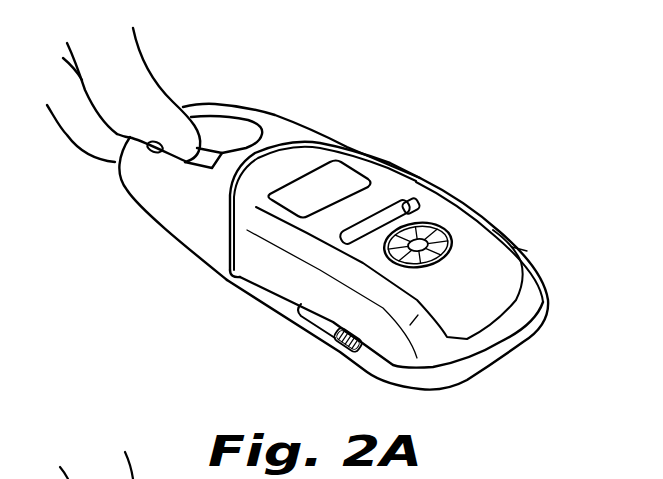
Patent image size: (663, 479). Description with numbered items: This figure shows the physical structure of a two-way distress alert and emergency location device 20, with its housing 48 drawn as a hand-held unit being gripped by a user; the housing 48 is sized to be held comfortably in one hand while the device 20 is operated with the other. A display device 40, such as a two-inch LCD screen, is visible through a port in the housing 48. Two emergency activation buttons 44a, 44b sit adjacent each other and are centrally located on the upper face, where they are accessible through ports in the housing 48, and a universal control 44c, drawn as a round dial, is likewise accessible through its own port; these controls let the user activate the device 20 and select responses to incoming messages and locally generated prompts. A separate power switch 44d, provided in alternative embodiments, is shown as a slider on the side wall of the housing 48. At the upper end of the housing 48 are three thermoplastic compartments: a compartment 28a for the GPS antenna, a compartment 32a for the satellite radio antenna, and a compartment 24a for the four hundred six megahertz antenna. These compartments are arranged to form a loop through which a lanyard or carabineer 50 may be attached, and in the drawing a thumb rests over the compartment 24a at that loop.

The device 20 is at (505, 88).
The lanyard or carabineer 50 is at (150, 123).
The compartment for the GPS antenna 28a is at (192, 205).
The compartment for the 406 MHz antenna 24a is at (229, 138).
The compartment for the satellite radio antenna 32a is at (293, 137).
The housing 48 is at (270, 300).
The display device 40 is at (333, 187).
The activation button 44a is at (375, 226).
The activation button 44b is at (410, 208).
The universal control 44c is at (420, 243).
The power switch 44d is at (338, 341).